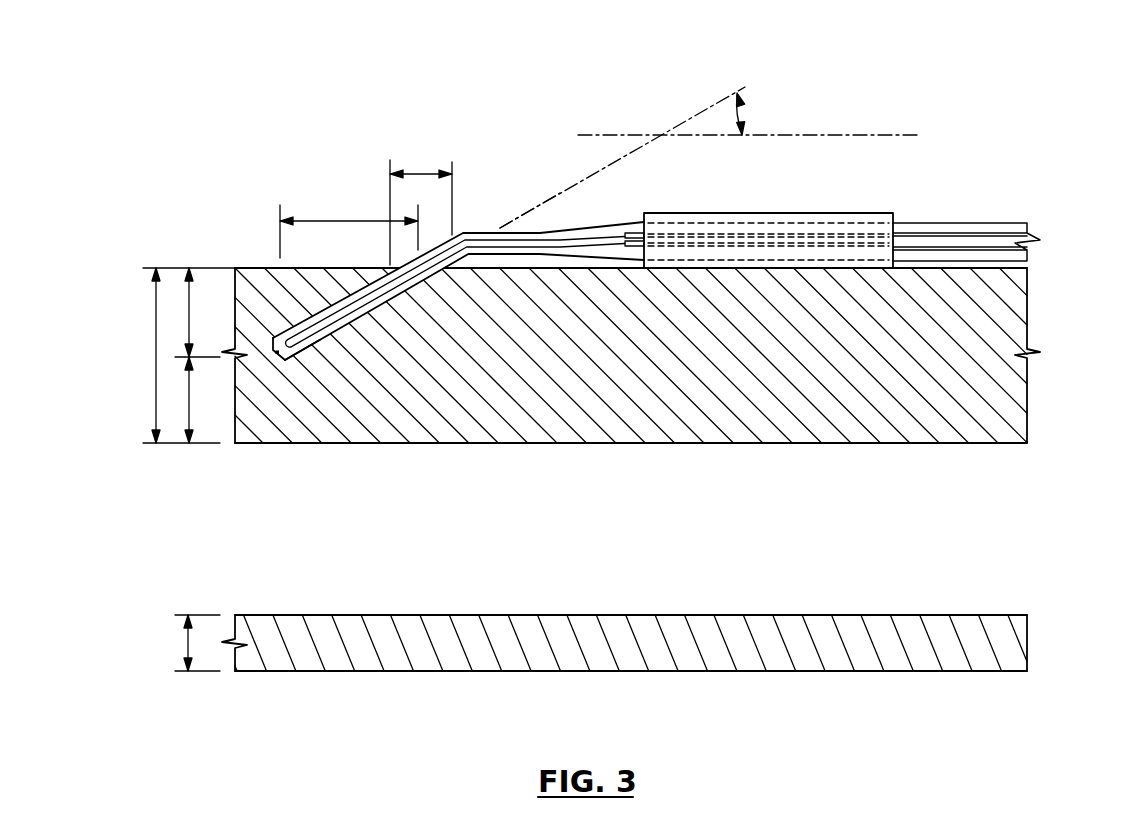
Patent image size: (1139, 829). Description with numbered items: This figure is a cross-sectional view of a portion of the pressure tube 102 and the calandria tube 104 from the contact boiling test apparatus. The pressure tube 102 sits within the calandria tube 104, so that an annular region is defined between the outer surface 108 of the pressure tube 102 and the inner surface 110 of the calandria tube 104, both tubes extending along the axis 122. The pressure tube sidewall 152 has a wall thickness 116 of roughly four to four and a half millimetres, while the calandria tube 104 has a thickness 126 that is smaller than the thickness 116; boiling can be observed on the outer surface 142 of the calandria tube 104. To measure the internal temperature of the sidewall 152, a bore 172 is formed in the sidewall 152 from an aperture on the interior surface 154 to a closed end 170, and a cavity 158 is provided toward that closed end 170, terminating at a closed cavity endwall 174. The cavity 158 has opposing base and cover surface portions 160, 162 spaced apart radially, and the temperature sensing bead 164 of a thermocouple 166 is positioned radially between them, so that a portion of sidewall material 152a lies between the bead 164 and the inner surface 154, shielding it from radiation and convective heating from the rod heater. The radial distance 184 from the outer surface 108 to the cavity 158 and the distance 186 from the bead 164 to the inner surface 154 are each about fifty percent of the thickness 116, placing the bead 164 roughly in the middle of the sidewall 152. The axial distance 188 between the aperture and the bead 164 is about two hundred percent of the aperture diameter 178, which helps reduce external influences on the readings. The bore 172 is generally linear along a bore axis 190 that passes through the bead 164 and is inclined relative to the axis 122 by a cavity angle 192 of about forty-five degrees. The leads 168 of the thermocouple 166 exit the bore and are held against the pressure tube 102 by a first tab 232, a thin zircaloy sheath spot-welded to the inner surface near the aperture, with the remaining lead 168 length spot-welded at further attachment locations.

The pressure tube 102 is at (940, 393).
The calandria tube 104 is at (983, 636).
The outer surface of the pressure tube 108 is at (587, 445).
The inner surface of the calandria tube 110 is at (613, 615).
The wall thickness 116 is at (155, 352).
The axis 122 is at (893, 134).
The calandria tube thickness 126 is at (188, 641).
The outer surface of the calandria tube 142 is at (517, 682).
The pressure tube sidewall 152 is at (797, 407).
The portion of the pressure tube sidewall material 152a is at (328, 278).
The interior surface of the pressure tube sidewall 154 is at (267, 268).
The cavity 158 is at (307, 367).
The base surface portion 160 is at (343, 343).
The cover surface portion 162 is at (303, 317).
The temperature sensing bead 164 is at (301, 365).
The thermocouple 166 is at (503, 213).
The leads 168 is at (957, 223).
The closed end of the bore 170 is at (271, 364).
The bore 172 is at (413, 293).
The cavity endwall 174 is at (276, 352).
The diameter of the aperture 178 is at (420, 173).
The radial distance 184 is at (188, 405).
The distance 186 is at (188, 300).
The axial distance 188 is at (313, 220).
The bore axis 190 is at (680, 124).
The cavity angle 192 is at (742, 106).
The first tab 232 is at (690, 213).